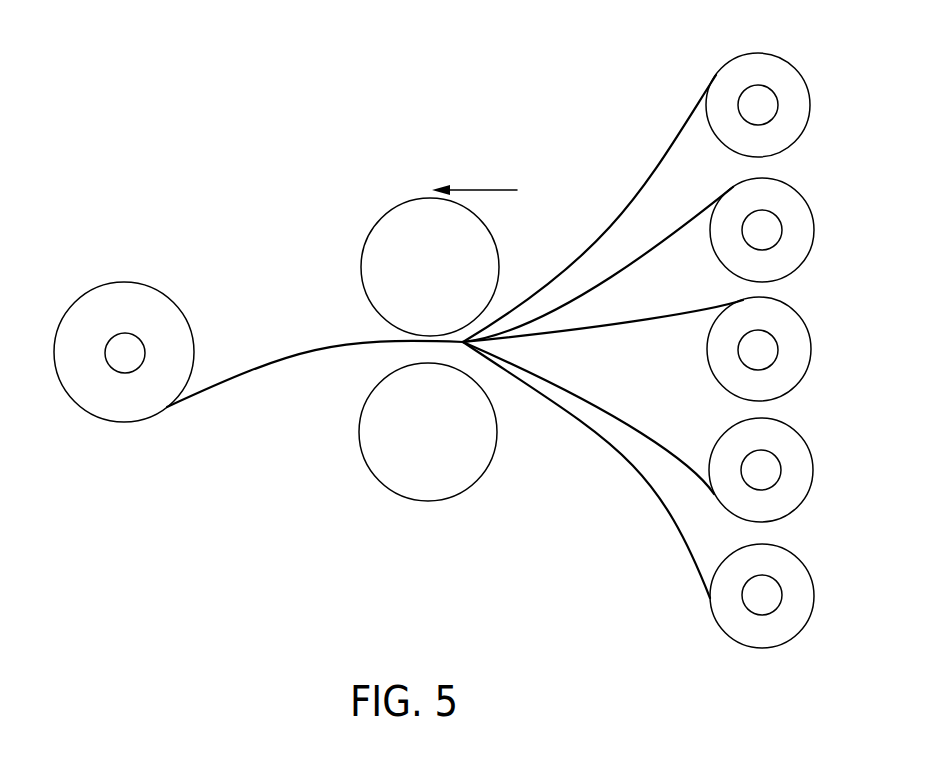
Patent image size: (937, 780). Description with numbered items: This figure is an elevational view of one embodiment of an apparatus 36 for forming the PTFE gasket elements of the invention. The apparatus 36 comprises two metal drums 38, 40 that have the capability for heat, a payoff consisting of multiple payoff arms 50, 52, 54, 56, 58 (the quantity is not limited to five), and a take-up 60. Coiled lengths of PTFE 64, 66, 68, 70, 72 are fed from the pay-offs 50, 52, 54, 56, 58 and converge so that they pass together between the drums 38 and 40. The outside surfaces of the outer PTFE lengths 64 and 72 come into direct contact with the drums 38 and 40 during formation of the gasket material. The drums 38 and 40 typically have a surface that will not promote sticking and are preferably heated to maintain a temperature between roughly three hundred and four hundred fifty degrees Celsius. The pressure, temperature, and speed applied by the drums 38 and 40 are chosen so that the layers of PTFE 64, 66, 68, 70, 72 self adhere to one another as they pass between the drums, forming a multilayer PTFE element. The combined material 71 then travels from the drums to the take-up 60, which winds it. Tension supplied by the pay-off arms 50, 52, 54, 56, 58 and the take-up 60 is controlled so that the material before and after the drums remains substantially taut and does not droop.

The apparatus 36 is at (547, 102).
The metal drum 38 is at (423, 485).
The metal drum 40 is at (378, 255).
The payoff arm 50 is at (770, 107).
The payoff arm 52 is at (770, 233).
The payoff arm 54 is at (767, 348).
The payoff arm 56 is at (770, 467).
The payoff arm 58 is at (770, 593).
The take-up 60 is at (122, 340).
The coiled length of PTFE 64 is at (672, 143).
The coiled length of PTFE 66 is at (632, 262).
The coiled length of PTFE 68 is at (690, 312).
The coiled length of PTFE 70 is at (660, 445).
The coiled length of PTFE 72 is at (663, 508).
The laminated web 71 is at (133, 422).